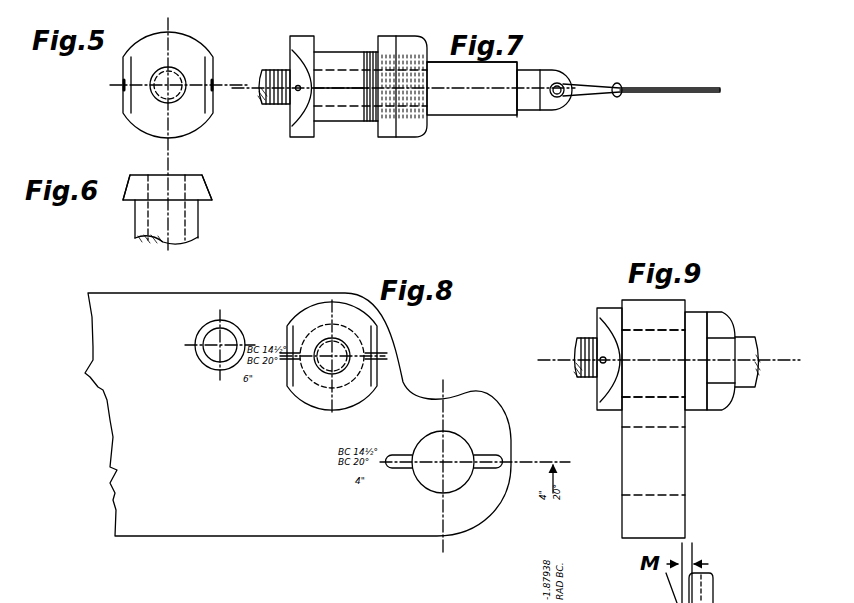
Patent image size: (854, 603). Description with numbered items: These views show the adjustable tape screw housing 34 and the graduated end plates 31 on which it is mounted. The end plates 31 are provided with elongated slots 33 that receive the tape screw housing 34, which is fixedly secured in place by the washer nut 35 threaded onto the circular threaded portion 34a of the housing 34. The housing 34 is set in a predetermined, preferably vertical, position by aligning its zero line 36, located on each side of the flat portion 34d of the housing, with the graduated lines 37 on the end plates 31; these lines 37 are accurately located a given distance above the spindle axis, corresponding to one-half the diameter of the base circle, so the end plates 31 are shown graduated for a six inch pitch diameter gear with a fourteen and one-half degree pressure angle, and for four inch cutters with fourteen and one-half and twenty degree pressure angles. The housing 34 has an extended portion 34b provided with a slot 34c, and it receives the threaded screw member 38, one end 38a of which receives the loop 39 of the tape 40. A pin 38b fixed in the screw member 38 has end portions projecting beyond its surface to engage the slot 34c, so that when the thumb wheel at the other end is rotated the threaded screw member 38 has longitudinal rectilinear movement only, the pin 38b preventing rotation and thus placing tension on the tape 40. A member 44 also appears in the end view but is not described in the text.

In FIG. 8, the graduated end plate 31 is at (132, 483).
In FIG. 9, the graduated end plate 31 is at (648, 528).
In FIG. 8, the elongated slot 33 is at (318, 394).
In FIG. 9, the elongated slot 33 is at (652, 390).
In FIG. 5, the tape screw housing 34 is at (187, 48).
In FIG. 6, the tape screw housing 34 is at (192, 178).
In FIG. 7, the tape screw housing 34 is at (303, 132).
In FIG. 8, the tape screw housing 34 is at (306, 320).
In FIG. 9, the tape screw housing 34 is at (610, 318).
In FIG. 7, the circular threaded portion 34a is at (335, 57).
In FIG. 7, the extended portion 34b is at (457, 120).
In FIG. 9, the extended portion 34b is at (747, 340).
In FIG. 7, the slot 34c is at (478, 64).
In FIG. 6, the flat portion 34d is at (228, 187).
In FIG. 7, the washer nut 35 is at (413, 133).
In FIG. 9, the washer nut 35 is at (712, 320).
In FIG. 5, the zero line 36 is at (127, 86).
In FIG. 7, the zero line 36 is at (300, 95).
In FIG. 9, the zero line 36 is at (603, 366).
In FIG. 8, the graduated lines 37 is at (487, 447).
In FIG. 7, the threaded screw member 38 is at (274, 72).
In FIG. 9, the threaded screw member 38 is at (587, 343).
In FIG. 7, the end of threaded screw member 38a is at (572, 80).
In FIG. 7, the pin 38b is at (505, 122).
In FIG. 7, the loop 39 is at (594, 82).
In FIG. 7, the tape 40 is at (688, 95).
In FIG. 9, the member 44 is at (760, 598).